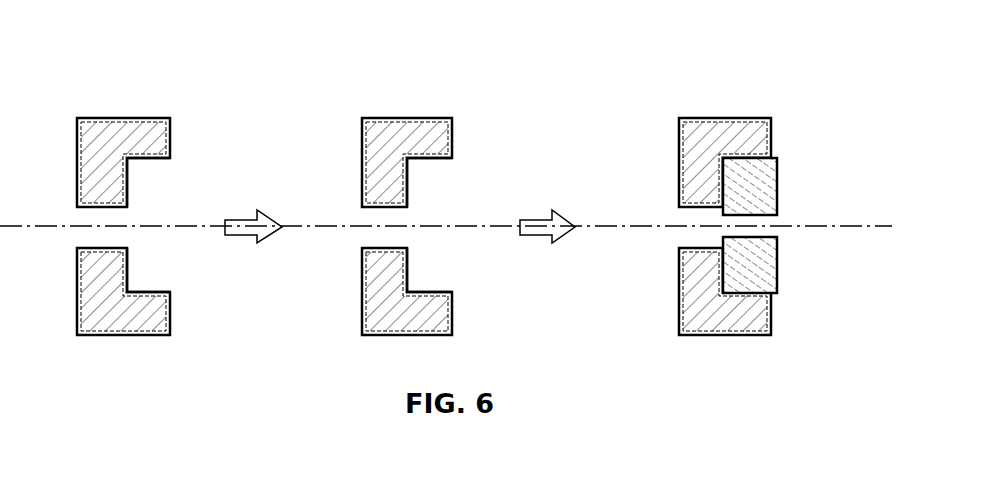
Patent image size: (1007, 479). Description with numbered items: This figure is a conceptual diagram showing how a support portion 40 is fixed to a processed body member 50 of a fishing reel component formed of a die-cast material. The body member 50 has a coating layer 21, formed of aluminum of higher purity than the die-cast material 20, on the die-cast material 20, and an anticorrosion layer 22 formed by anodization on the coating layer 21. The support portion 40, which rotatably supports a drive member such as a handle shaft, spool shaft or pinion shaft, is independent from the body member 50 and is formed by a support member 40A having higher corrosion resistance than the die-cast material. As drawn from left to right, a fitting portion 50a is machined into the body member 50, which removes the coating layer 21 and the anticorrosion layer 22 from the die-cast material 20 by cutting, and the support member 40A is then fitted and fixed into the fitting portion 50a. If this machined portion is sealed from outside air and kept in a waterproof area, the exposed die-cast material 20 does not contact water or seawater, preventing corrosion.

The die-cast material 20 is at (163, 137).
The coating layer 21 is at (100, 135).
The anticorrosion layer 22 is at (110, 120).
The body member 50 is at (449, 184).
The fitting portion (opening) 50a is at (494, 215).
The support portion 40 is at (787, 225).
The support member 40A is at (757, 197).